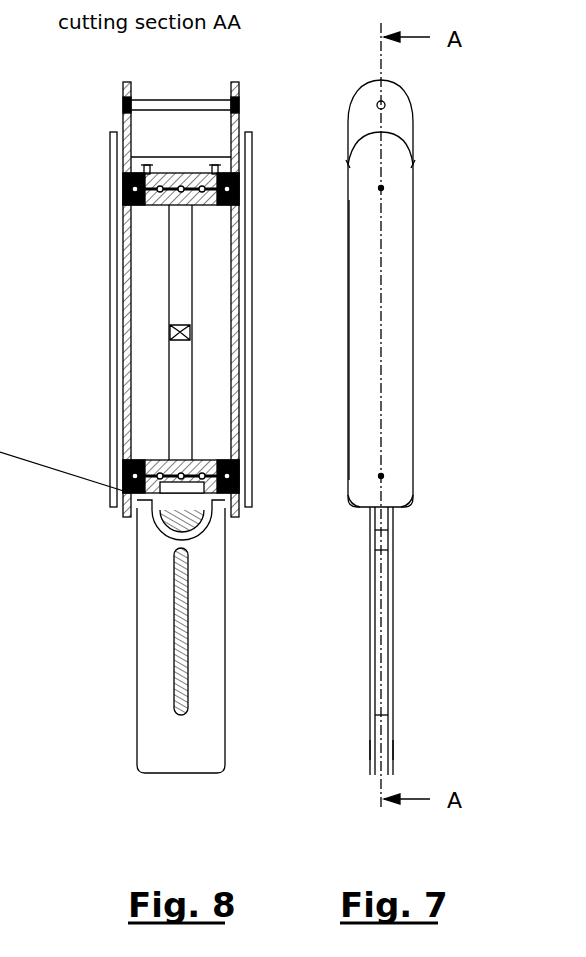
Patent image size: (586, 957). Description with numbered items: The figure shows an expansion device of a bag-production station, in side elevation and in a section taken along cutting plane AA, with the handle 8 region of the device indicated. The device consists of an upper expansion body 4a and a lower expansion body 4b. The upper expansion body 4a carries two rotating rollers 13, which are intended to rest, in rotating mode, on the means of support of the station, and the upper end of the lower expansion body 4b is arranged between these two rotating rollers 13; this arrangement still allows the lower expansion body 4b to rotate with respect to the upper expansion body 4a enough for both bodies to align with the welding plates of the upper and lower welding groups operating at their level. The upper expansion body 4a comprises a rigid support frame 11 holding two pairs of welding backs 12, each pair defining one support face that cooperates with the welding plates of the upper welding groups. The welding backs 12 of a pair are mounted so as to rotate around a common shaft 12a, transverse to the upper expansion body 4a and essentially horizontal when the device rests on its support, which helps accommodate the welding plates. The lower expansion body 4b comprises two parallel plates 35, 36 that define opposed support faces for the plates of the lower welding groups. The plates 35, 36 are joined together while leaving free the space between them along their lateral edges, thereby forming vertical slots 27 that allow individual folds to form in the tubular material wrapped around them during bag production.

In FIG. 8, the upper expansion body 4a is at (112, 320).
In FIG. 7, the upper expansion body 4a is at (414, 317).
In FIG. 8, the lower expansion body 4b is at (137, 628).
In FIG. 7, the lower expansion body 4b is at (389, 620).
In FIG. 8, the handle 8 is at (231, 524).
In FIG. 7, the rigid support frame 11 is at (413, 245).
In FIG. 8, the welding backs 12 is at (163, 428).
In FIG. 8, the common shaft 12a is at (237, 314).
In FIG. 8, the rotating rollers 13 is at (135, 505).
In FIG. 7, the rotating rollers 13 is at (355, 507).
In FIG. 7, the vertical slots 27 is at (383, 678).
In FIG. 8, the plate 35 is at (137, 718).
In FIG. 7, the plate 35 is at (372, 748).
In FIG. 7, the plate 36 is at (390, 748).